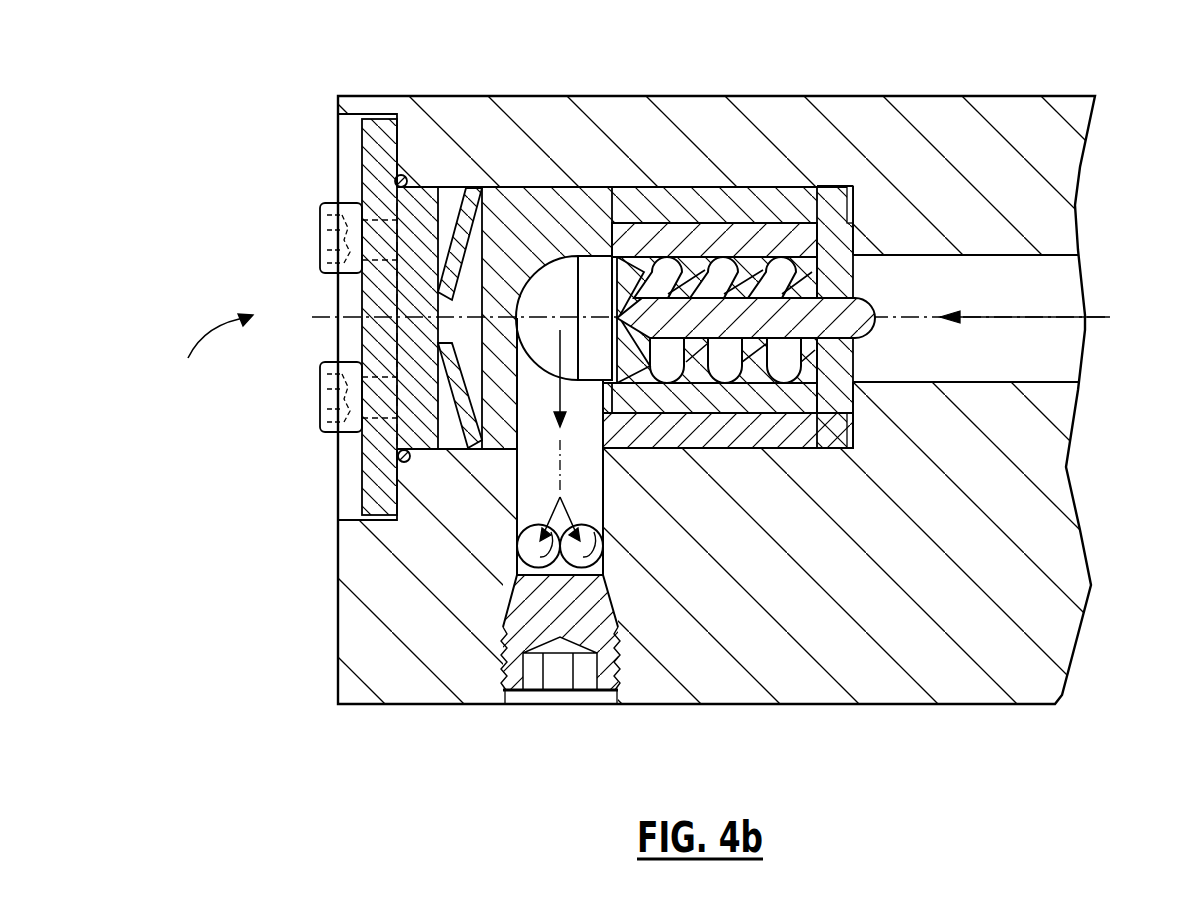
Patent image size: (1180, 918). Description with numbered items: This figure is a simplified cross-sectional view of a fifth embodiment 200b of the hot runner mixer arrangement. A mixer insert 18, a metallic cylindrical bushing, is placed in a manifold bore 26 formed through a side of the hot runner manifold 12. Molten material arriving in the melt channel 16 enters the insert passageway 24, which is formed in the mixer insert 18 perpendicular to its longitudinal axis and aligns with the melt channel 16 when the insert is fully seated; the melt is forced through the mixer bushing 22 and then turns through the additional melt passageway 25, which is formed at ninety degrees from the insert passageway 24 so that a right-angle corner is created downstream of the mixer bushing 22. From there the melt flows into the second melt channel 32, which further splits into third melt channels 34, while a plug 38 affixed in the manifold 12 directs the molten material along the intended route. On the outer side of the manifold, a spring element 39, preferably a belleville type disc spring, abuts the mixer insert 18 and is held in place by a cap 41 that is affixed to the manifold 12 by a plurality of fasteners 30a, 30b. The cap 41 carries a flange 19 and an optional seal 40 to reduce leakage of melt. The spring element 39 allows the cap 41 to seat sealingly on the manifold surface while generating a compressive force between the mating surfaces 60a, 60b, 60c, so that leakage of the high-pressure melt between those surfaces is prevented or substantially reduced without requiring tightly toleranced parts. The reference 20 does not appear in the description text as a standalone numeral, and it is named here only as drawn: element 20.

The hot runner manifold 12 is at (722, 117).
The melt channel 16 is at (1023, 301).
The mixer insert 18 is at (472, 207).
The flange 19 is at (362, 473).
The plunger end 20 is at (838, 232).
The mixer bushing 22 is at (758, 232).
The insert passageway 24 is at (628, 223).
The melt passageway 25 is at (554, 402).
The manifold bore 26 is at (548, 195).
The fastener 30a is at (320, 224).
The fastener 30b is at (319, 415).
The second melt channel 32 is at (598, 491).
The third melt channel 34 is at (542, 560).
The plug 38 is at (532, 690).
The spring element 39 is at (448, 195).
The seal 40 is at (402, 175).
The cap 41 is at (358, 160).
The surface 60a is at (858, 396).
The surface 60b is at (805, 450).
The surface 60c is at (617, 413).
The fifth embodiment 200b is at (206, 355).